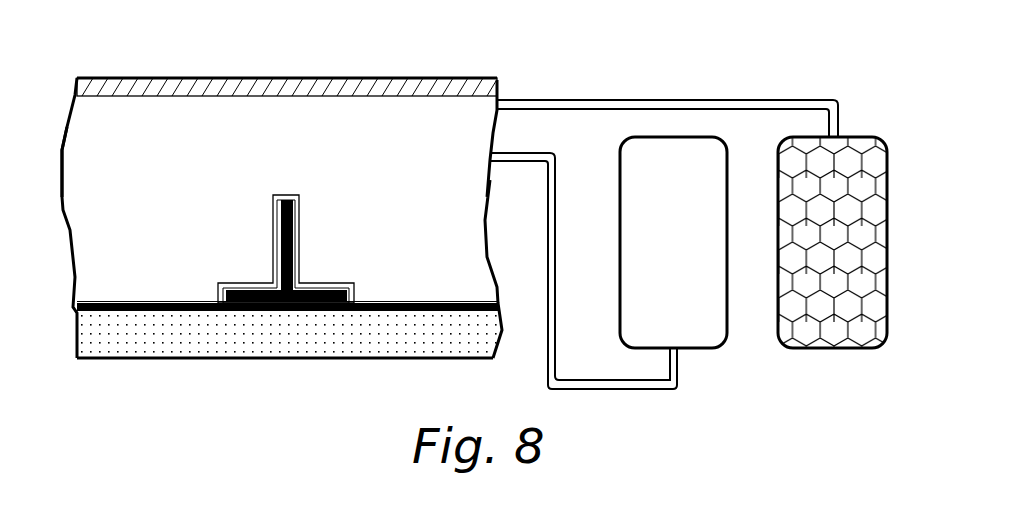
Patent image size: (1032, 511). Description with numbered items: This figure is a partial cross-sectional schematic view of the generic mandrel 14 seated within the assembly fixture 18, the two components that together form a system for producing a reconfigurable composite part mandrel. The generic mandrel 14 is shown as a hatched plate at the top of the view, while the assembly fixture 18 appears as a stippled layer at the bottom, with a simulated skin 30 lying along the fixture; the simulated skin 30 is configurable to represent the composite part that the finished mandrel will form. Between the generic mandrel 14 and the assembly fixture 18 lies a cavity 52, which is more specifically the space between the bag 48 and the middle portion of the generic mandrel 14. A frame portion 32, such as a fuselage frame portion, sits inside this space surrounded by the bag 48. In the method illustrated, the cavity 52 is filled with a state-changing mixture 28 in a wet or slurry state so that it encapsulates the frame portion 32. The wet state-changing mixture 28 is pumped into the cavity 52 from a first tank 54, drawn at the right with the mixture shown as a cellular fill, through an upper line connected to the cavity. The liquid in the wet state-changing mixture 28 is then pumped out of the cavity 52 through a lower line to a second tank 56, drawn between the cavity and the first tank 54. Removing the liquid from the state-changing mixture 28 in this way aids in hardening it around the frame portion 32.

The generic mandrel 14 is at (287, 88).
The cavity 52 is at (78, 135).
The assembly fixture 18 is at (190, 337).
The simulated skin 30 is at (325, 312).
The frame portion 32 is at (290, 228).
The bag 48 is at (333, 282).
The second tank 56 is at (723, 347).
The state-changing mixture 28 is at (843, 160).
The first tank 54 is at (845, 350).